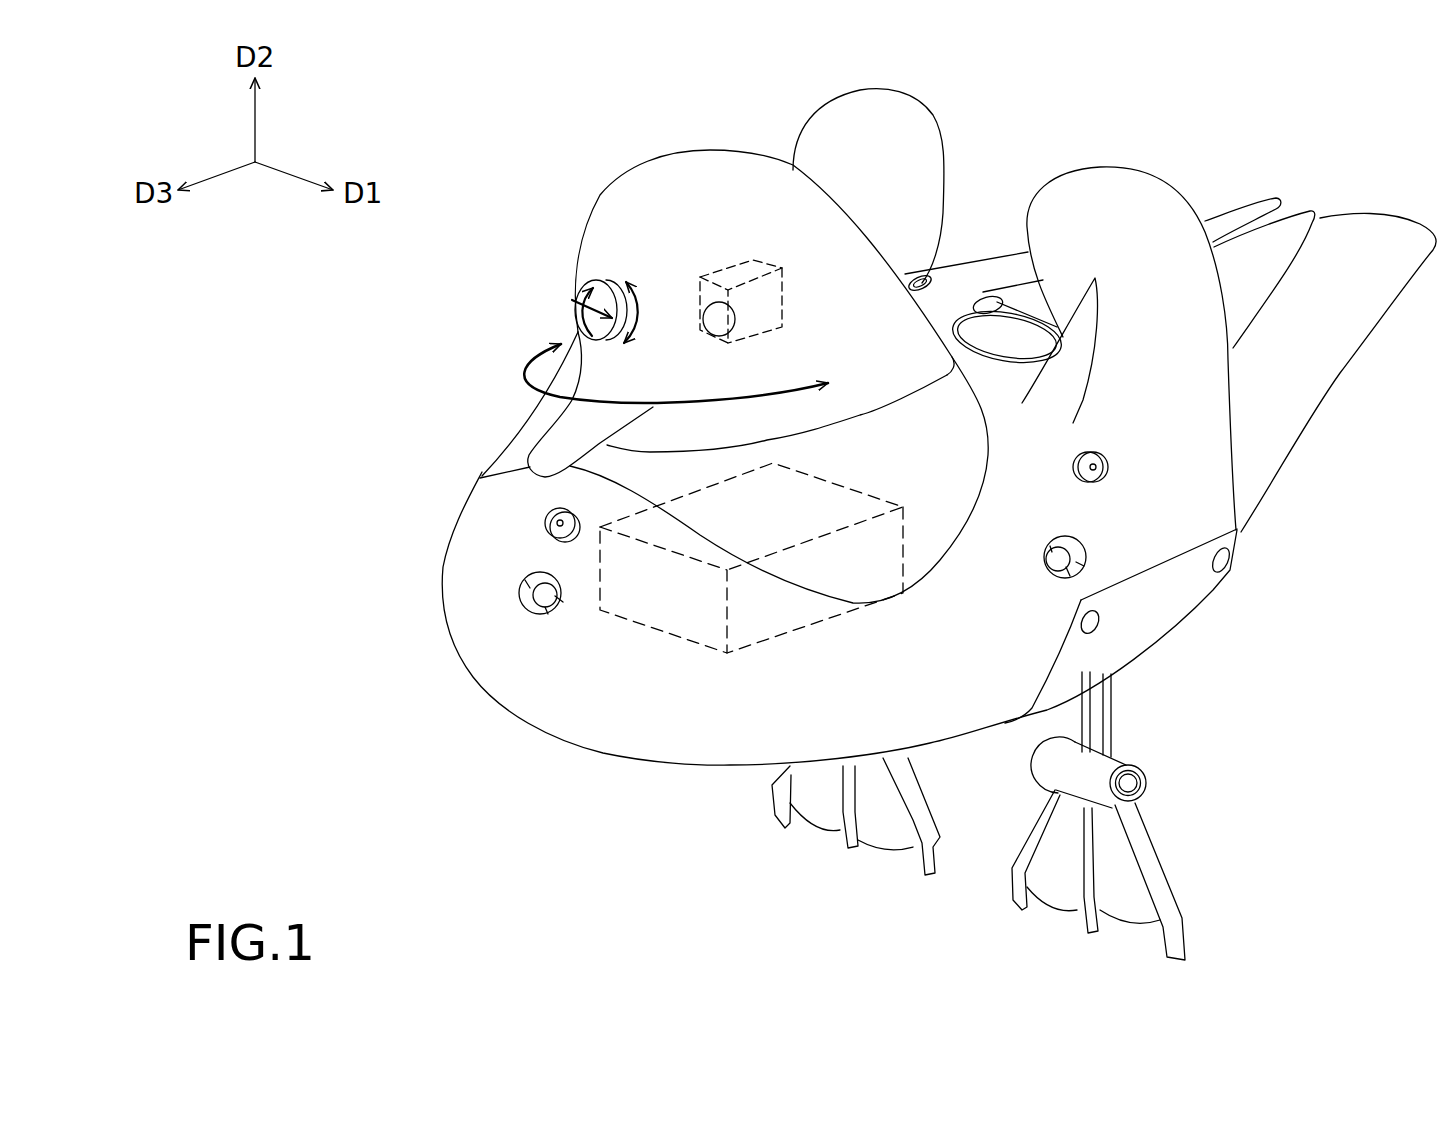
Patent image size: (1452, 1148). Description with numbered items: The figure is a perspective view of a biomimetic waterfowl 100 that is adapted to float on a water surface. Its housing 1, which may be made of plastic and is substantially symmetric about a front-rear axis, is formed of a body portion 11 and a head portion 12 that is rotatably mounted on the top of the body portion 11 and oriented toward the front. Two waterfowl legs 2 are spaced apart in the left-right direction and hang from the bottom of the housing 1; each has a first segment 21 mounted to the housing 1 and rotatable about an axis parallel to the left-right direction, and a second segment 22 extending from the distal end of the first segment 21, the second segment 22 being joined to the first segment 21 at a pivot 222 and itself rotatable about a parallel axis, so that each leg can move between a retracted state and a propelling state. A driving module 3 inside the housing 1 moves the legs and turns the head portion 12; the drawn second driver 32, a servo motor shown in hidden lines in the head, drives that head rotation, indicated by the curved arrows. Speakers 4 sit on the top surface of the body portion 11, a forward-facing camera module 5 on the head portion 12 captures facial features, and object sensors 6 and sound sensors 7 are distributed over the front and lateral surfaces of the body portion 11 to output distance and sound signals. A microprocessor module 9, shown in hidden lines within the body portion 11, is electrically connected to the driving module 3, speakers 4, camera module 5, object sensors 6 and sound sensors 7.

The biomimetic waterfowl 100 is at (440, 102).
The housing 1 is at (537, 723).
The body portion 11 is at (617, 723).
The head portion 12 is at (652, 197).
The waterfowl legs 2 is at (1147, 762).
The first segment 21 is at (1097, 700).
The second segment 22 is at (1155, 865).
The claw joint 222 is at (1052, 769).
The driving module 3 is at (745, 212).
The second driver 32 is at (740, 262).
The speakers 4 is at (997, 330).
The camera module 5 is at (577, 300).
The object sensors 6 is at (540, 593).
The sound sensors 7 is at (548, 523).
The microprocessor module 9 is at (620, 513).